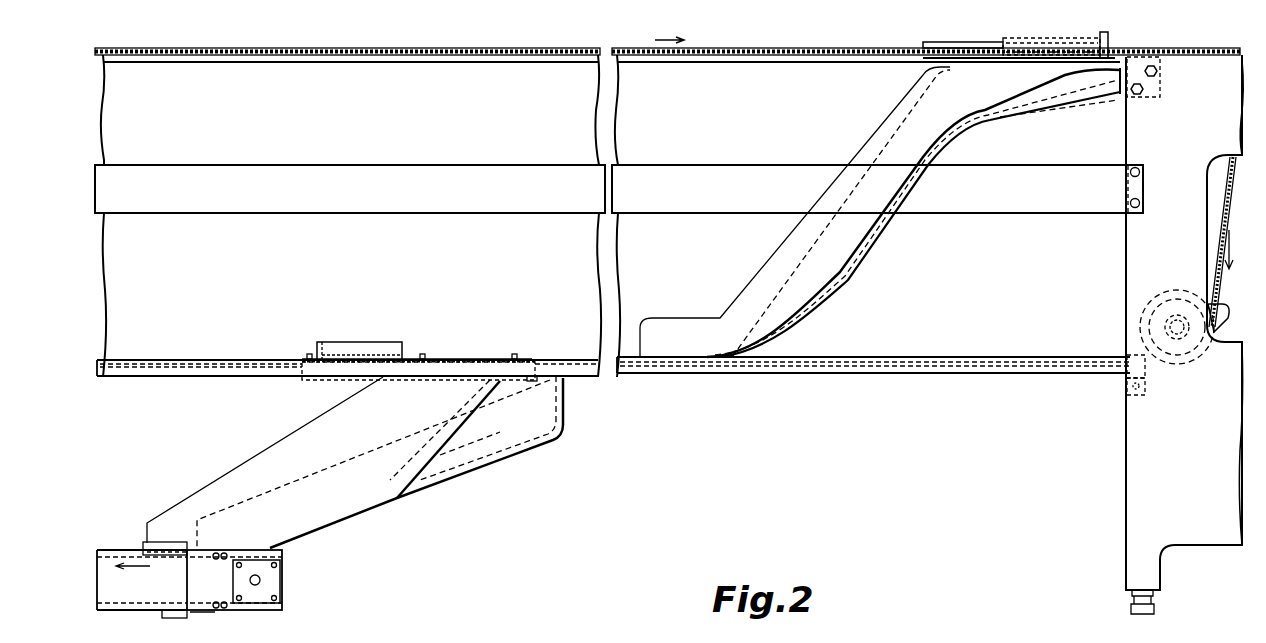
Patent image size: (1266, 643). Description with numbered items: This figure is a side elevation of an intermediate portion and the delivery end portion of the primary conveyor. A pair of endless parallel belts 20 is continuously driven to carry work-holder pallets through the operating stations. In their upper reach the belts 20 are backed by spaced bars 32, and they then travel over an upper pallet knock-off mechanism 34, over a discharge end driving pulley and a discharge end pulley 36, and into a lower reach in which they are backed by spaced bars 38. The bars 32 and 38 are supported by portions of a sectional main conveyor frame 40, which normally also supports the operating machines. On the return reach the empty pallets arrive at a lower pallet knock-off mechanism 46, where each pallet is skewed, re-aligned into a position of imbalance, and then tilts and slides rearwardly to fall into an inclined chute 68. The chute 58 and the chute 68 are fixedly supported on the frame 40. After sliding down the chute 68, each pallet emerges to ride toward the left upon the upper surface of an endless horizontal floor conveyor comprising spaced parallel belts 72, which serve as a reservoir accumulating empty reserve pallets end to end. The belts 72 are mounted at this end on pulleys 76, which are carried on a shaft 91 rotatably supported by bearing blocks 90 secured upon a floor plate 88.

The endless parallel belts 20 is at (403, 54).
The spaced bars 32 is at (500, 64).
The upper pallet knock-off mechanism 34 is at (1138, 41).
The discharge end pulley 36 is at (1215, 312).
The spaced bars 38 is at (190, 378).
The sectional main conveyor frame 40 is at (1126, 455).
The lower pallet knock-off mechanism 46 is at (402, 332).
The chute 58 is at (850, 257).
The inclined chute 68 is at (375, 505).
The floor conveyor belts 72 is at (98, 553).
The pulleys 76 is at (232, 575).
The floor plate 88 is at (190, 615).
The bearing blocks 90 is at (280, 560).
The shaft 91 is at (262, 580).